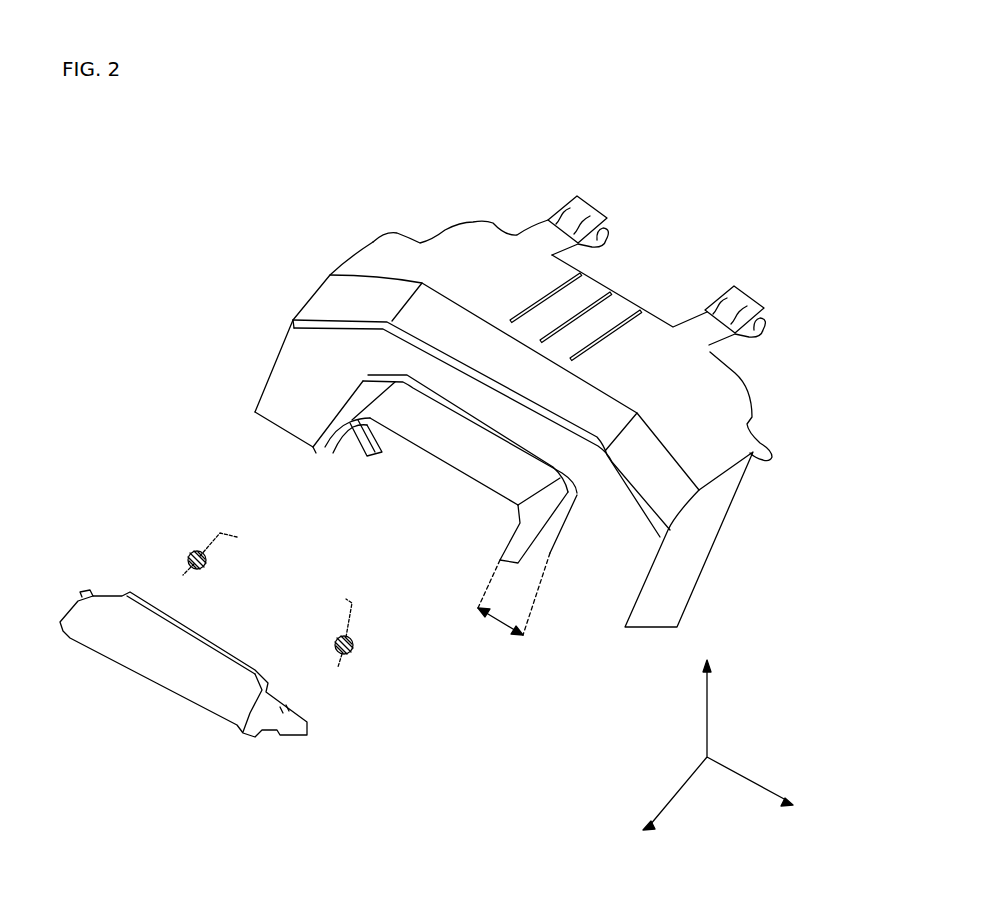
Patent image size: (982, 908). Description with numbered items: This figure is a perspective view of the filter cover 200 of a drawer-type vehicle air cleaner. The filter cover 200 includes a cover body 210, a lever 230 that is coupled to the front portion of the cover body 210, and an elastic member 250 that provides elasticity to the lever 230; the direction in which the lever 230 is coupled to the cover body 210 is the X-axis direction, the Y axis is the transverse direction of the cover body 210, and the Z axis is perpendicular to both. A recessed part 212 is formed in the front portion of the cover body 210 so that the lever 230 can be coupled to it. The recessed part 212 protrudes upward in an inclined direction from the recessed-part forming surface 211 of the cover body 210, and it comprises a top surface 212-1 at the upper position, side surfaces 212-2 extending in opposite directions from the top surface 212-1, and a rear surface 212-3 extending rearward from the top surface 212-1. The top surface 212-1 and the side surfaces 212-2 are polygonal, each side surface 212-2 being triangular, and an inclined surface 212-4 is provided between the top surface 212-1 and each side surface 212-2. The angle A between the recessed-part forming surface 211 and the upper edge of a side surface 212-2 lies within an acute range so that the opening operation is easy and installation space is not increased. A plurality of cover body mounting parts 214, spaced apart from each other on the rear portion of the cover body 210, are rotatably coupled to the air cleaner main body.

The filter cover 200 is at (155, 126).
The cover body 210 is at (374, 246).
The recessed-part forming surface 211 is at (638, 550).
The recessed part 212 is at (440, 483).
The top surface 212-1 is at (437, 440).
The side surfaces 212-2 is at (543, 550).
The rear surface 212-3 is at (460, 413).
The inclined surface 212-4 is at (547, 503).
The cover body mounting parts 214 is at (758, 307).
The lever 230 is at (193, 683).
The elastic member 250 is at (207, 565).